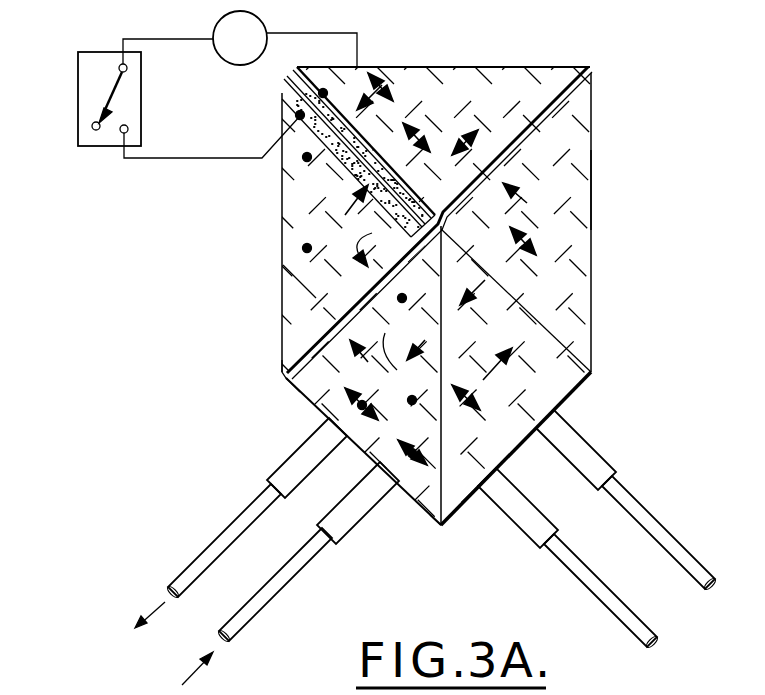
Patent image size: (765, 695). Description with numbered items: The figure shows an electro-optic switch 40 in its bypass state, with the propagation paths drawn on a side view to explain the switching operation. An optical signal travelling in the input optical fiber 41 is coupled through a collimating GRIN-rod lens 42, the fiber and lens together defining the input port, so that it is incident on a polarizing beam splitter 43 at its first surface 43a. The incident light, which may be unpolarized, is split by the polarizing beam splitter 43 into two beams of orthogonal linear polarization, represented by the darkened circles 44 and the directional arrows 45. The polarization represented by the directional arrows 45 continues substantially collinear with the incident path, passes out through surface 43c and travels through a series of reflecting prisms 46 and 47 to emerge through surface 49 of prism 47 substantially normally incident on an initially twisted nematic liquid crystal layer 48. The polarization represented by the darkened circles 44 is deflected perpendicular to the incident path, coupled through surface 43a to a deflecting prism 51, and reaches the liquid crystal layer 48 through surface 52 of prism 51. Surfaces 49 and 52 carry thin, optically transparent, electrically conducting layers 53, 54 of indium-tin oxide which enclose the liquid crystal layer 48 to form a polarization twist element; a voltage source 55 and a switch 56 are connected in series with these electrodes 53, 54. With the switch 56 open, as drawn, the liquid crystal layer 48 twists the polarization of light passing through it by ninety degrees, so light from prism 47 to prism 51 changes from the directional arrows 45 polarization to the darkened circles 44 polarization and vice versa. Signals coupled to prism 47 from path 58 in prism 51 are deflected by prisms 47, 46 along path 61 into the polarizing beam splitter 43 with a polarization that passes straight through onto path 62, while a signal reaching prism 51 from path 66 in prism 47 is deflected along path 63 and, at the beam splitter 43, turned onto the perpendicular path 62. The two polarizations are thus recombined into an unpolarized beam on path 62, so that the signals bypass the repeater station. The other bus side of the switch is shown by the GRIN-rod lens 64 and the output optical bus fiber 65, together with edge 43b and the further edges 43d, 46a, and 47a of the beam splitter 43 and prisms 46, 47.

The electro-optic switch 40 is at (641, 71).
The input optical fiber 41 is at (272, 595).
The collimating GRIN-rod lens 42 is at (368, 512).
The polarizing beam splitter 43 is at (460, 490).
The first surface of polarizing beam splitter 43a is at (440, 527).
The surface of polarizing beam splitter 43b is at (573, 393).
The surface of polarizing beam splitter 43c is at (516, 300).
The lower left corner of crystal 43d is at (285, 374).
The darkened circles 44 is at (307, 244).
The directional arrows 45 is at (447, 152).
The reflecting prism 46 is at (575, 221).
The right edge 46a is at (592, 192).
The reflecting prism 47 is at (570, 77).
The top edge 47a is at (517, 67).
The twisted nematic liquid crystal layer 48 is at (300, 108).
The surface of prism 49 is at (323, 93).
The deflecting prism 51 is at (282, 318).
The surface of prism 52 is at (300, 117).
The electrically conducting layer 53 is at (287, 78).
The electrically conducting layer 54 is at (290, 90).
The voltage source 55 is at (214, 44).
The switch 56 is at (78, 93).
The path 58 is at (283, 265).
The path 61 is at (473, 72).
The path 62 is at (385, 340).
The path 63 is at (374, 240).
The GRIN-rod lens 64 is at (290, 452).
The output optical bus fiber 65 is at (230, 530).
The path 66 is at (418, 97).